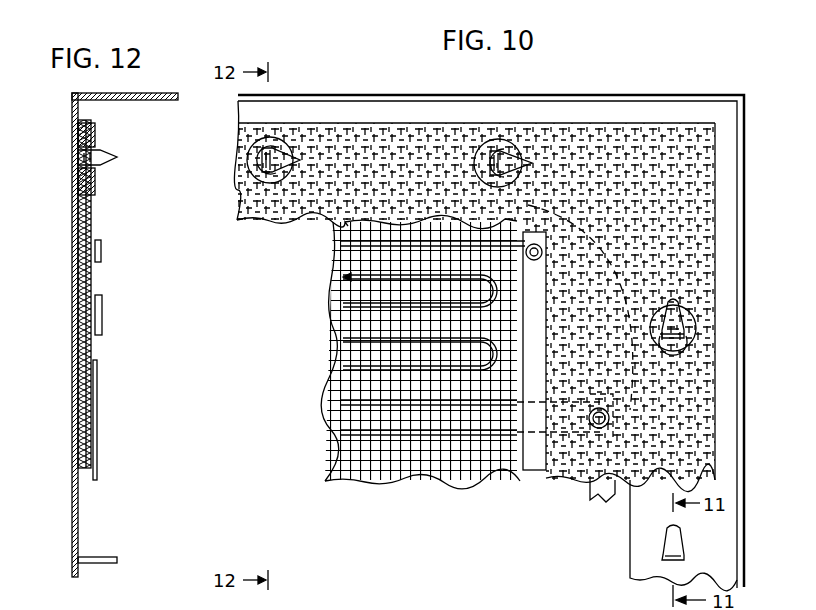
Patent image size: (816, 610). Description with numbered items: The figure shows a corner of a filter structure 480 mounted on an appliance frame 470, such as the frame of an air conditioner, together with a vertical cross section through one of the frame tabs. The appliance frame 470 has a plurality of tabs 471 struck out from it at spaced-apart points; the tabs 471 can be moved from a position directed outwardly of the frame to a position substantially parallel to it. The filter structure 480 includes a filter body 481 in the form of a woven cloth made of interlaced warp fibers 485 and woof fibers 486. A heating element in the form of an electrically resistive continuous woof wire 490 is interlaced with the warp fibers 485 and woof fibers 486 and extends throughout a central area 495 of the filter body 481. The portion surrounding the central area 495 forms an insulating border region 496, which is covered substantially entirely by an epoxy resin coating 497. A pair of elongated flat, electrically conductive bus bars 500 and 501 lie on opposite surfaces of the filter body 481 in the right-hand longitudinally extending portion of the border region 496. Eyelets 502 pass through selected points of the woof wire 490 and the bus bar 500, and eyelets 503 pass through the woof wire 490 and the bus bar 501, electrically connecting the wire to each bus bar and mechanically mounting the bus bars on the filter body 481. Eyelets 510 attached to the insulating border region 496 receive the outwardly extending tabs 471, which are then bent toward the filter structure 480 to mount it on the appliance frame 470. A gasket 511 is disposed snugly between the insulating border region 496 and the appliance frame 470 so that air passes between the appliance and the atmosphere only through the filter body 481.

In FIG. 10, the appliance frame 470 is at (700, 108).
In FIG. 12, the appliance frame 470 is at (73, 110).
In FIG. 10, the tabs 471 is at (510, 160).
In FIG. 12, the tabs 471 is at (83, 158).
In FIG. 10, the filter structure 480 is at (677, 72).
In FIG. 12, the filter structure 480 is at (87, 474).
In FIG. 10, the filter body 481 is at (415, 122).
In FIG. 10, the warp fibers 485 is at (403, 462).
In FIG. 10, the woof fibers 486 is at (358, 462).
In FIG. 10, the woof wire 490 is at (355, 372).
In FIG. 10, the central area 495 is at (470, 475).
In FIG. 10, the insulating border region 496 is at (348, 150).
In FIG. 10, the epoxy resin coating 497 is at (397, 165).
In FIG. 10, the bus bar 500 is at (540, 308).
In FIG. 12, the bus bar 500 is at (97, 427).
In FIG. 10, the bus bar 501 is at (615, 431).
In FIG. 10, the eyelets 502 is at (543, 252).
In FIG. 12, the eyelets 502 is at (101, 251).
In FIG. 10, the eyelets 503 is at (610, 420).
In FIG. 10, the eyelets 510 is at (250, 150).
In FIG. 12, the gasket 511 is at (80, 432).